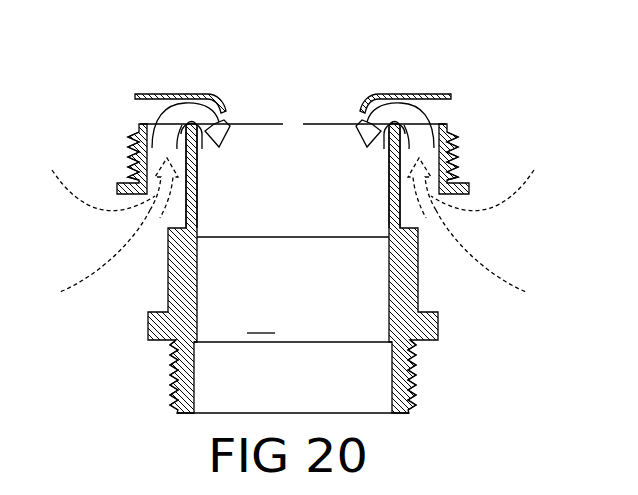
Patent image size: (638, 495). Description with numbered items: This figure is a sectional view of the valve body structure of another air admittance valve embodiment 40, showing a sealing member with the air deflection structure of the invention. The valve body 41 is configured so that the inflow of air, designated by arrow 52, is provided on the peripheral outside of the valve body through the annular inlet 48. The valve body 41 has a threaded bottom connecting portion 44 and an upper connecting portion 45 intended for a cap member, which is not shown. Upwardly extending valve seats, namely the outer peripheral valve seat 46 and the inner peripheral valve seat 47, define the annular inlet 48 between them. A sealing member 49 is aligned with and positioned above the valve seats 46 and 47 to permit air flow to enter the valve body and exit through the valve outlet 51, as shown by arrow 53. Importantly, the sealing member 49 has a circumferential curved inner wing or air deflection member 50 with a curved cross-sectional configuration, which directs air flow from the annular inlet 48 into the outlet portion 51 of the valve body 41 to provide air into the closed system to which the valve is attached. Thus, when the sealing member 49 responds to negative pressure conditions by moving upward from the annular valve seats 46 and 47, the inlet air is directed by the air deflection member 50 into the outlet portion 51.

The air admittance valve embodiment 40 is at (470, 107).
The valve body 41 is at (437, 293).
The threaded bottom connecting portion 44 is at (424, 382).
The upper connecting portion 45 is at (432, 152).
The outer peripheral valve seat 46 is at (150, 147).
The inner peripheral valve seat 47 is at (199, 136).
The annular inlet 48 is at (150, 168).
The sealing member 49 is at (157, 93).
The air deflection member 50 is at (210, 97).
The valve outlet 51 is at (293, 325).
The arrow 52 is at (417, 212).
The arrow 53 is at (220, 120).